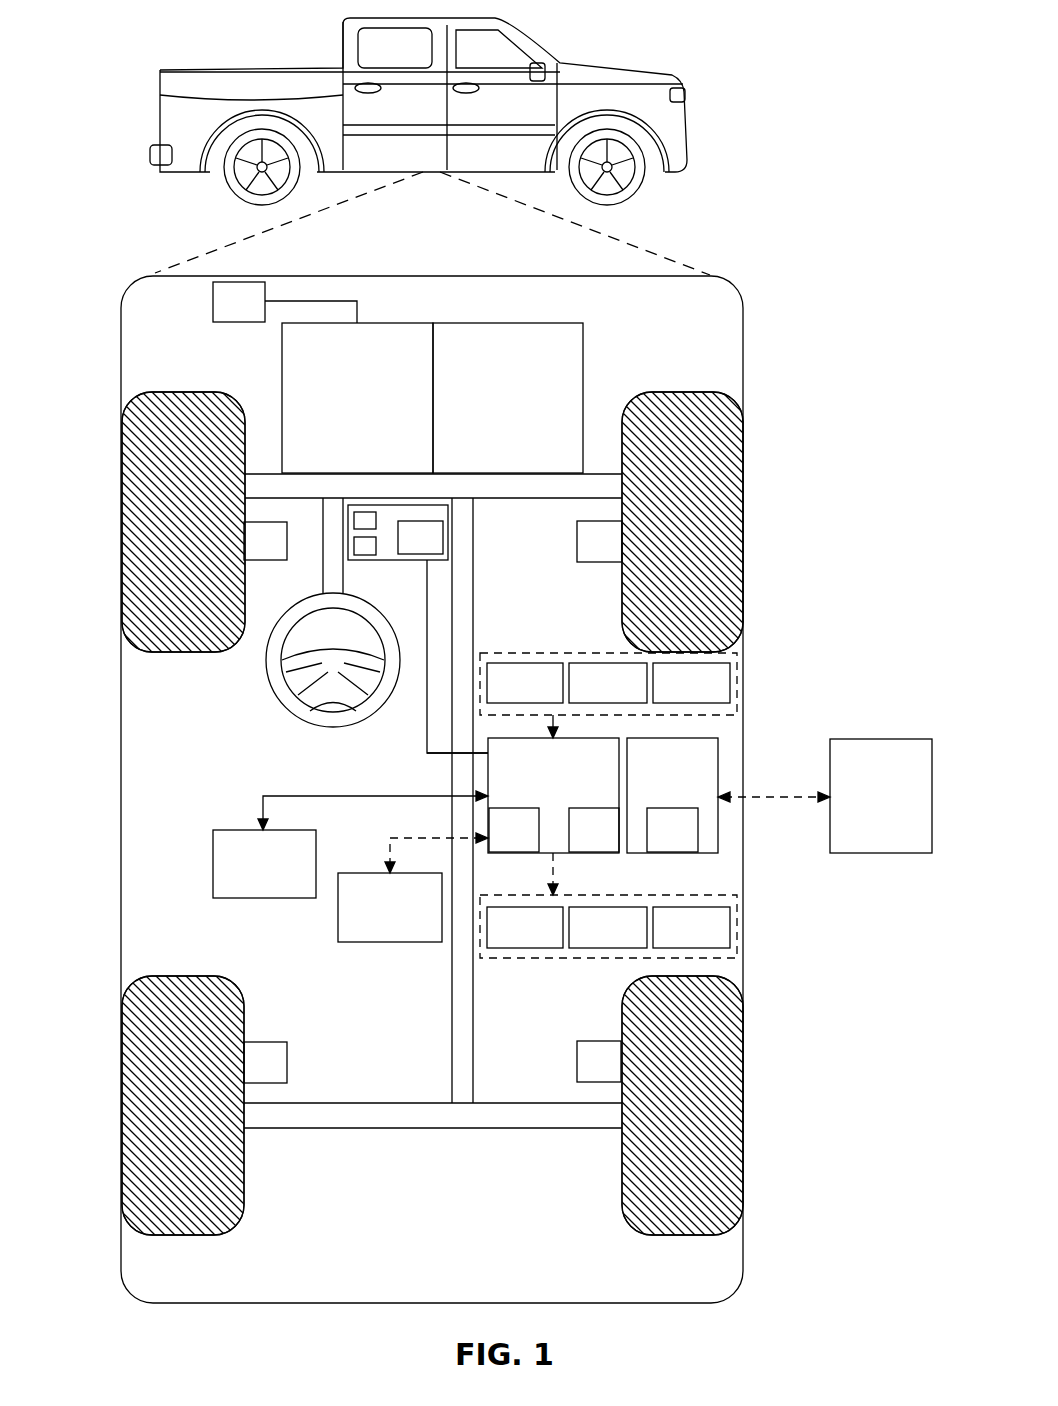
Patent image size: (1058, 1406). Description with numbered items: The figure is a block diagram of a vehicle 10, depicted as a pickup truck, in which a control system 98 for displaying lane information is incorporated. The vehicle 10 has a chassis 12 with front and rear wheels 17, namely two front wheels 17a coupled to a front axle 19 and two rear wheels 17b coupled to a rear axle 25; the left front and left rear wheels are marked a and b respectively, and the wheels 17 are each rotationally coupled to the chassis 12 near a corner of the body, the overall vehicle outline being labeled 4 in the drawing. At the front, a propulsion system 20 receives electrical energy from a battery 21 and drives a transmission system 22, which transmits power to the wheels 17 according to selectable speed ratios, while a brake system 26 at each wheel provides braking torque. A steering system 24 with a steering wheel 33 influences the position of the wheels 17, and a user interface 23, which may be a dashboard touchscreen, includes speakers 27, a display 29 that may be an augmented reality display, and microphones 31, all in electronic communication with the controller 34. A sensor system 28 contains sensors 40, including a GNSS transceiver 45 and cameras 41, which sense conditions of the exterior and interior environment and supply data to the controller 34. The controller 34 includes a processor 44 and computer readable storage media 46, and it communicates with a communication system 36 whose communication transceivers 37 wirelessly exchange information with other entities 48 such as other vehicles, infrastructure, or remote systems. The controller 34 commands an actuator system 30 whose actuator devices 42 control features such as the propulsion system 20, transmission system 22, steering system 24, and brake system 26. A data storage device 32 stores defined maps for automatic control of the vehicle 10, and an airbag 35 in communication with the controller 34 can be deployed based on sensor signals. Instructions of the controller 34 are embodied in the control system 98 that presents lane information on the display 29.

The vehicle 10 is at (622, 70).
The vehicle body 4 is at (120, 752).
The wheels 17 is at (182, 392).
The front wheels 17a is at (722, 508).
The rear wheels 17b is at (720, 1103).
The front left wheel a is at (147, 510).
The rear left wheel b is at (147, 1100).
The front axle 19 is at (547, 500).
The rear axle 25 is at (508, 1102).
The chassis 12 is at (452, 973).
The battery 21 is at (238, 280).
The propulsion system 20 is at (357, 398).
The transmission system 22 is at (508, 398).
The brake system 26 is at (433, 802).
The user interface 23 is at (410, 505).
The speakers 27 is at (360, 512).
The display 29 is at (352, 548).
The microphones 31 is at (420, 538).
The steering system 24 is at (351, 563).
The steering wheel 33 is at (266, 678).
The sensor system 28 is at (568, 653).
The sensors 40 is at (525, 683).
The GNSS transceiver 45 is at (608, 683).
The cameras 41 is at (691, 683).
The controller 34 is at (553, 795).
The processor 44 is at (514, 830).
The computer readable storage device or media 46 is at (594, 830).
The communication system 36 is at (672, 795).
The communication transceivers 37 is at (672, 830).
The actuator system 30 is at (572, 958).
The actuator devices 42 is at (608, 927).
The other entities 48 is at (825, 796).
The airbag 35 is at (350, 844).
The data storage device 32 is at (413, 887).
The control system 98 is at (403, 773).